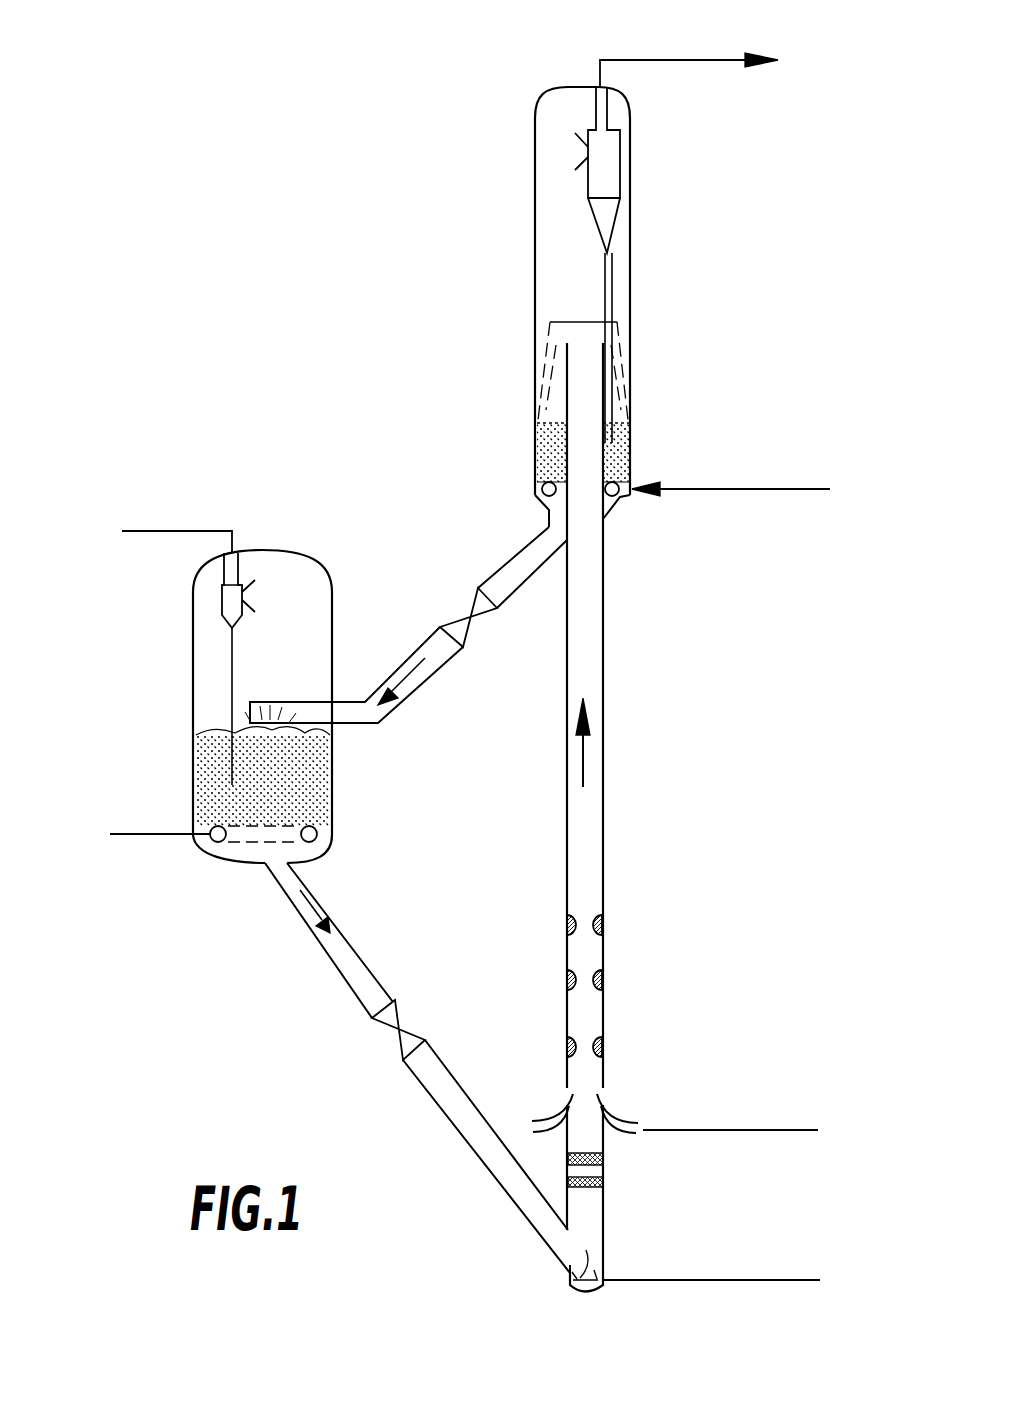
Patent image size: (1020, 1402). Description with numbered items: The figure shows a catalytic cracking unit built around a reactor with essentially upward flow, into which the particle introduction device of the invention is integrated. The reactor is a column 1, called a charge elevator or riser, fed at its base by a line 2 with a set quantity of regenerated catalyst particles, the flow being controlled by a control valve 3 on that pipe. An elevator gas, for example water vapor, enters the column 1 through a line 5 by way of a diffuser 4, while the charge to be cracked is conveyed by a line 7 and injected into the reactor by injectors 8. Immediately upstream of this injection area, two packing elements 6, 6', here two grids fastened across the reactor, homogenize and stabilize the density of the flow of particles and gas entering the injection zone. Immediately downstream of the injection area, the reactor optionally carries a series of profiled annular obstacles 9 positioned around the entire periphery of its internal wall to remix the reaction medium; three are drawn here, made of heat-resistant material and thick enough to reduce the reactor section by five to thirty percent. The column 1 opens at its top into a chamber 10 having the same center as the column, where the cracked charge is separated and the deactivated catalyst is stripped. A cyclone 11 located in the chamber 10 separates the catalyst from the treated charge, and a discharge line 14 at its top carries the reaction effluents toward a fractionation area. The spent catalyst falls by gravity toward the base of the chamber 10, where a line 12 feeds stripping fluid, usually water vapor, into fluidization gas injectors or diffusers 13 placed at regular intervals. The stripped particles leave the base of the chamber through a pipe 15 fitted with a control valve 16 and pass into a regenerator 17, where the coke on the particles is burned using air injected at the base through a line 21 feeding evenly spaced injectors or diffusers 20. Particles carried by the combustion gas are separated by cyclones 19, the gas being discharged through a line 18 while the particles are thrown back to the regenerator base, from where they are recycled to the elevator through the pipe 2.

The column 1 is at (602, 645).
The line 2 is at (500, 1165).
The control valve 3 is at (387, 1013).
The diffuser 4 is at (587, 1250).
The line 5 is at (680, 1280).
The packing element 6 is at (620, 1200).
The packing element 6' is at (645, 1171).
The line 7 is at (763, 1128).
The injectors 8 is at (623, 1113).
The profiled annular obstacles 9 is at (606, 925).
The chamber 10 is at (630, 392).
The cyclone 11 is at (607, 218).
The line 12 is at (748, 489).
The fluidization gas injectors 13 is at (620, 497).
The discharge line 14 is at (667, 60).
The pipe 15 is at (513, 572).
The control valve 16 is at (455, 618).
The regenerator 17 is at (193, 712).
The line 18 is at (157, 532).
The cyclones 19 is at (222, 600).
The injectors 20 is at (333, 838).
The line 21 is at (142, 836).